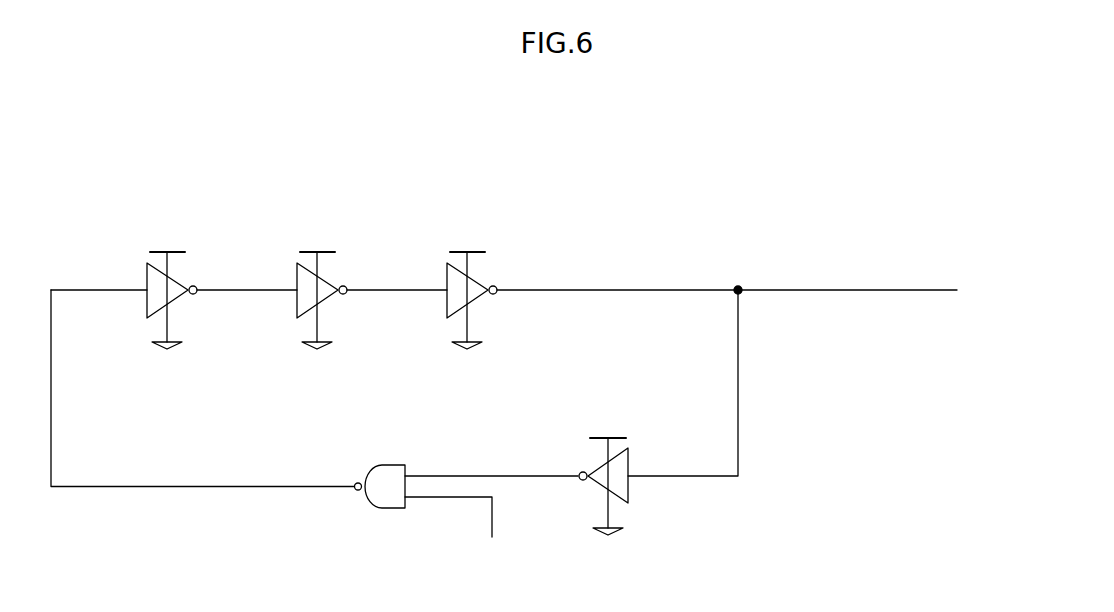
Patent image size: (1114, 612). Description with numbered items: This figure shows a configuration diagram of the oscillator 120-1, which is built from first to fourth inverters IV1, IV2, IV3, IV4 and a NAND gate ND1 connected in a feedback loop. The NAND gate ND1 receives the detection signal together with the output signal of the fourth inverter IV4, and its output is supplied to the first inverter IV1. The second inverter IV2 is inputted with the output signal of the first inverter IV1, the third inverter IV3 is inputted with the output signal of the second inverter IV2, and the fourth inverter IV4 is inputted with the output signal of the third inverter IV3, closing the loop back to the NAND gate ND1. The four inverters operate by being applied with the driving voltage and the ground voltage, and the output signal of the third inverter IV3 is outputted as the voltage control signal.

The oscillator 120-1 is at (1092, 111).
The first inverter IV1 is at (184, 284).
The second inverter IV2 is at (334, 284).
The third inverter IV3 is at (484, 284).
The fourth inverter IV4 is at (628, 452).
The NAND gate ND1 is at (394, 464).